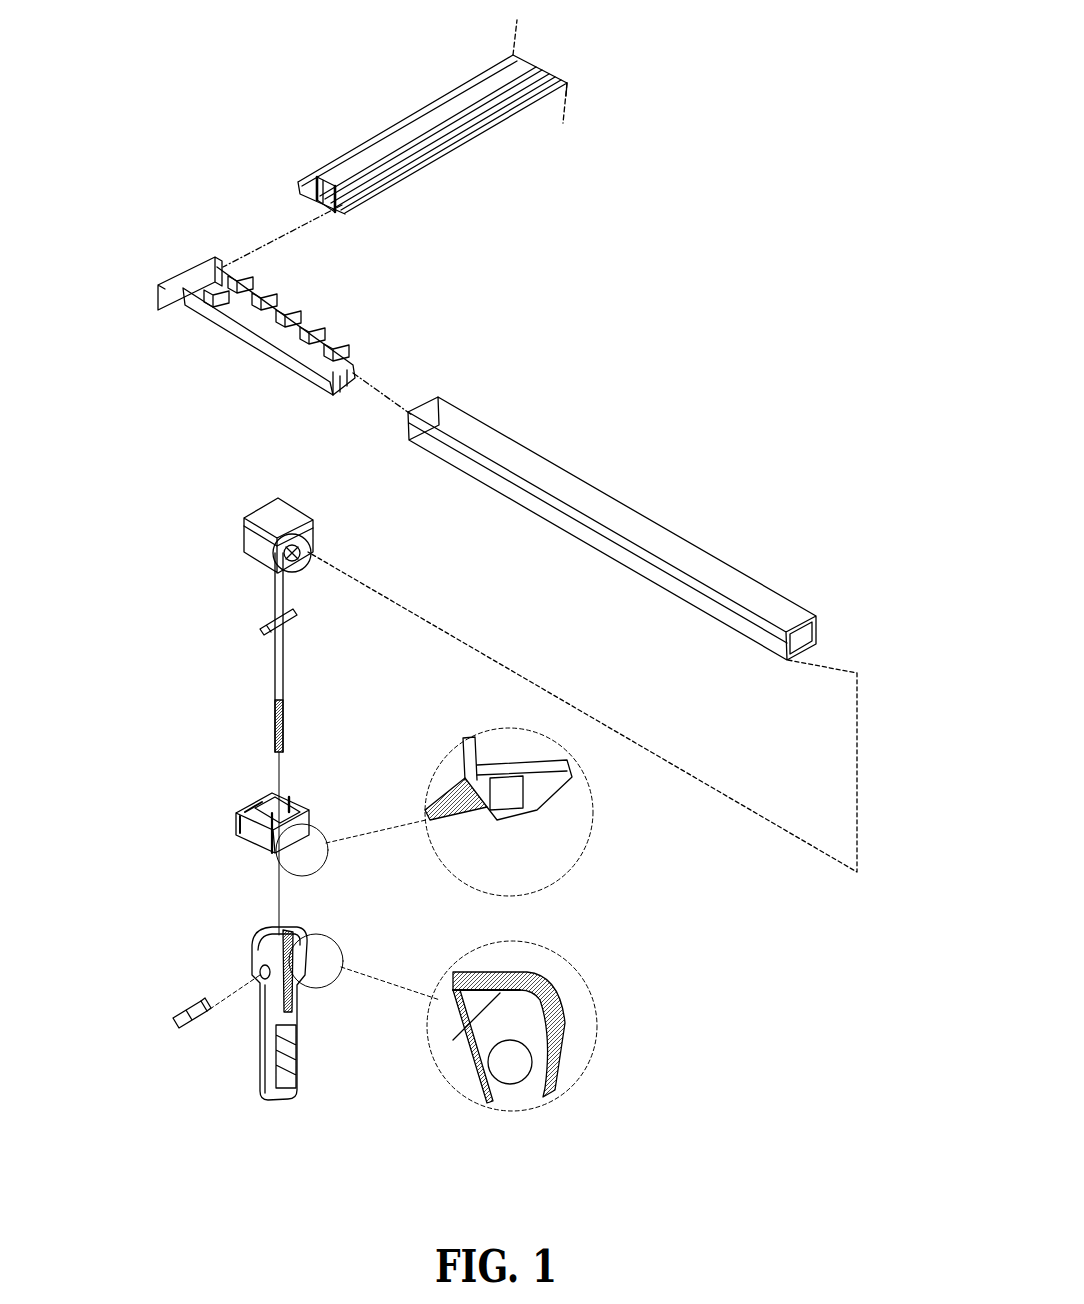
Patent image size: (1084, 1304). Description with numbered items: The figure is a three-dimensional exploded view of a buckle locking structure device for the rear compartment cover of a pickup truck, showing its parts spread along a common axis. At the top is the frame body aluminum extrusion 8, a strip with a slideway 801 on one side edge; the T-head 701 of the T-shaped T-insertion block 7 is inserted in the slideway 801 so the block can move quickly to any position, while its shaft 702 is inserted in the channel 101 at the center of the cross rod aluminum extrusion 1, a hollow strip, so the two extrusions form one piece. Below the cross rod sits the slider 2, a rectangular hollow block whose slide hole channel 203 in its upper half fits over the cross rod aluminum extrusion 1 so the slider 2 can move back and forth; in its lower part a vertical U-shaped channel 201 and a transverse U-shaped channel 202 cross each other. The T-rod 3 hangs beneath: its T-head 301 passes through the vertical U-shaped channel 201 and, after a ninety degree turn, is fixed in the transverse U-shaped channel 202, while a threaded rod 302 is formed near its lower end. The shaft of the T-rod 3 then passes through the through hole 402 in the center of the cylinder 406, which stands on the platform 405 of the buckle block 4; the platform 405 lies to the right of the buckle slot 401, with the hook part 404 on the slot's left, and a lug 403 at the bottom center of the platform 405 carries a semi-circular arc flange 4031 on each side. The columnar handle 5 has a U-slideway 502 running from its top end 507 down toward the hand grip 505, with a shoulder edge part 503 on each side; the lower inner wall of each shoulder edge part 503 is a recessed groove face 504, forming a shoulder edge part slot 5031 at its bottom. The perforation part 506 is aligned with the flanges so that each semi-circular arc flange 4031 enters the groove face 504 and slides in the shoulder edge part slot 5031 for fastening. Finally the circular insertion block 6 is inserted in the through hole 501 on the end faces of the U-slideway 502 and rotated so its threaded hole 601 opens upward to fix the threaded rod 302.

The cross rod aluminum extrusion 1 is at (533, 452).
The channel 101 is at (820, 638).
The slider 2 is at (307, 546).
The vertical U-shaped channel 201 is at (315, 550).
The transverse U-shaped channel 202 is at (297, 578).
The slide hole channel 203 is at (313, 528).
The T-rod 3 is at (235, 744).
The T-head 301 is at (265, 627).
The threaded rod 302 is at (272, 732).
The buckle block 4 is at (285, 838).
The buckle slot 401 is at (237, 830).
The through hole 402 is at (293, 807).
The lug 403 is at (516, 812).
The semi-circular arc flange 4031 is at (592, 827).
The hook part 404 is at (247, 813).
The platform 405 is at (287, 807).
The cylinder 406 is at (268, 827).
The handle 5 is at (302, 999).
The through hole 501 is at (507, 1067).
The U-slideway 502 is at (270, 933).
The shoulder edge part 503 is at (492, 1027).
The groove face 504 is at (543, 1028).
The hand grip 505 is at (300, 1068).
The shoulder edge part slot 5031 is at (453, 1037).
The perforation part 506 is at (293, 995).
The top end 507 is at (283, 927).
The circular insertion block 6 is at (175, 1014).
The threaded hole 601 is at (188, 1003).
The T-insertion block 7 is at (192, 270).
The T-head 701 is at (173, 312).
The shaft 702 is at (355, 373).
The frame body aluminum extrusion 8 is at (455, 102).
The slideway 801 is at (375, 203).